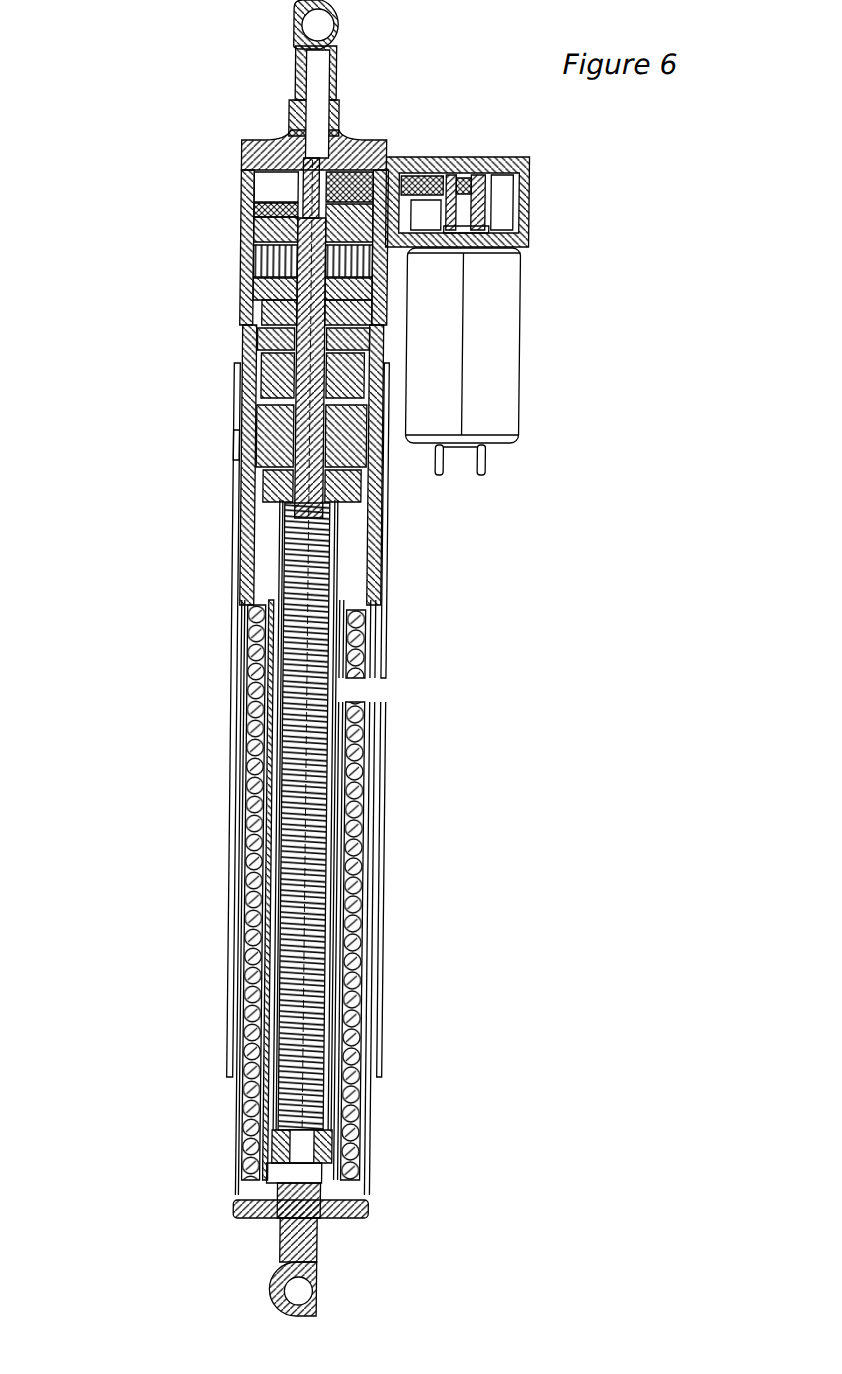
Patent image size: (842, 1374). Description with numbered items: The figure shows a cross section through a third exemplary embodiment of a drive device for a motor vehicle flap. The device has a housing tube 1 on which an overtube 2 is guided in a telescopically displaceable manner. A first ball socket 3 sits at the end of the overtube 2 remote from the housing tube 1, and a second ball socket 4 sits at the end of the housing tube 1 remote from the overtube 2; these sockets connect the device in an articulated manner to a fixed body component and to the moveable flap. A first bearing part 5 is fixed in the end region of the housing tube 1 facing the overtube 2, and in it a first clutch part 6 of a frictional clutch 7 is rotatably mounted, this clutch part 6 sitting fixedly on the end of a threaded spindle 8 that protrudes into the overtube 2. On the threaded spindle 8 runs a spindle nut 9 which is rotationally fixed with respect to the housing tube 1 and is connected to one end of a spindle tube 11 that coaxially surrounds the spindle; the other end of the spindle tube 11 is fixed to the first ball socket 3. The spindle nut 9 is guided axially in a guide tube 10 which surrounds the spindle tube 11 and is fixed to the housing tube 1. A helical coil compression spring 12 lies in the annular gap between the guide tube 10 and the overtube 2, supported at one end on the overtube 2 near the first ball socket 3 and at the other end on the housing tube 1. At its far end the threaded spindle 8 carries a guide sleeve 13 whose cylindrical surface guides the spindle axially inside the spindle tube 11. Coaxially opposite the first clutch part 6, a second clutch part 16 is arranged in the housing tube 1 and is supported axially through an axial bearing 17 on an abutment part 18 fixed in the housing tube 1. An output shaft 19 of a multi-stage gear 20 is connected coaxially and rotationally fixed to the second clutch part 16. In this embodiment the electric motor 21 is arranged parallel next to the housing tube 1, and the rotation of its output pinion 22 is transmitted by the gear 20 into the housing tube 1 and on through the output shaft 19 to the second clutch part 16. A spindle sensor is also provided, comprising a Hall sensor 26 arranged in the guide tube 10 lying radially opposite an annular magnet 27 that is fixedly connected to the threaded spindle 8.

The housing tube 1 is at (240, 405).
The overtube 2 is at (244, 1123).
The first ball socket 3 is at (311, 1287).
The second ball socket 4 is at (288, 17).
The first bearing part 5 is at (238, 442).
The first clutch part 6 is at (237, 416).
The frictional clutch 7 is at (394, 381).
The threaded spindle 8 is at (390, 817).
The spindle nut 9 is at (388, 538).
The guide tube 10 is at (391, 865).
The spindle tube 11 is at (391, 913).
The helical coil compression spring 12 is at (392, 943).
The guide sleeve 13 is at (365, 1152).
The second clutch part 16 is at (388, 373).
The axial bearing 17 is at (388, 355).
The abutment part 18 is at (240, 318).
The output shaft 19 is at (388, 333).
The gear 20 is at (403, 151).
The electric motor 21 is at (500, 408).
The output pinion 22 is at (490, 187).
The Hall sensor 26 is at (238, 493).
The annular magnet 27 is at (238, 516).